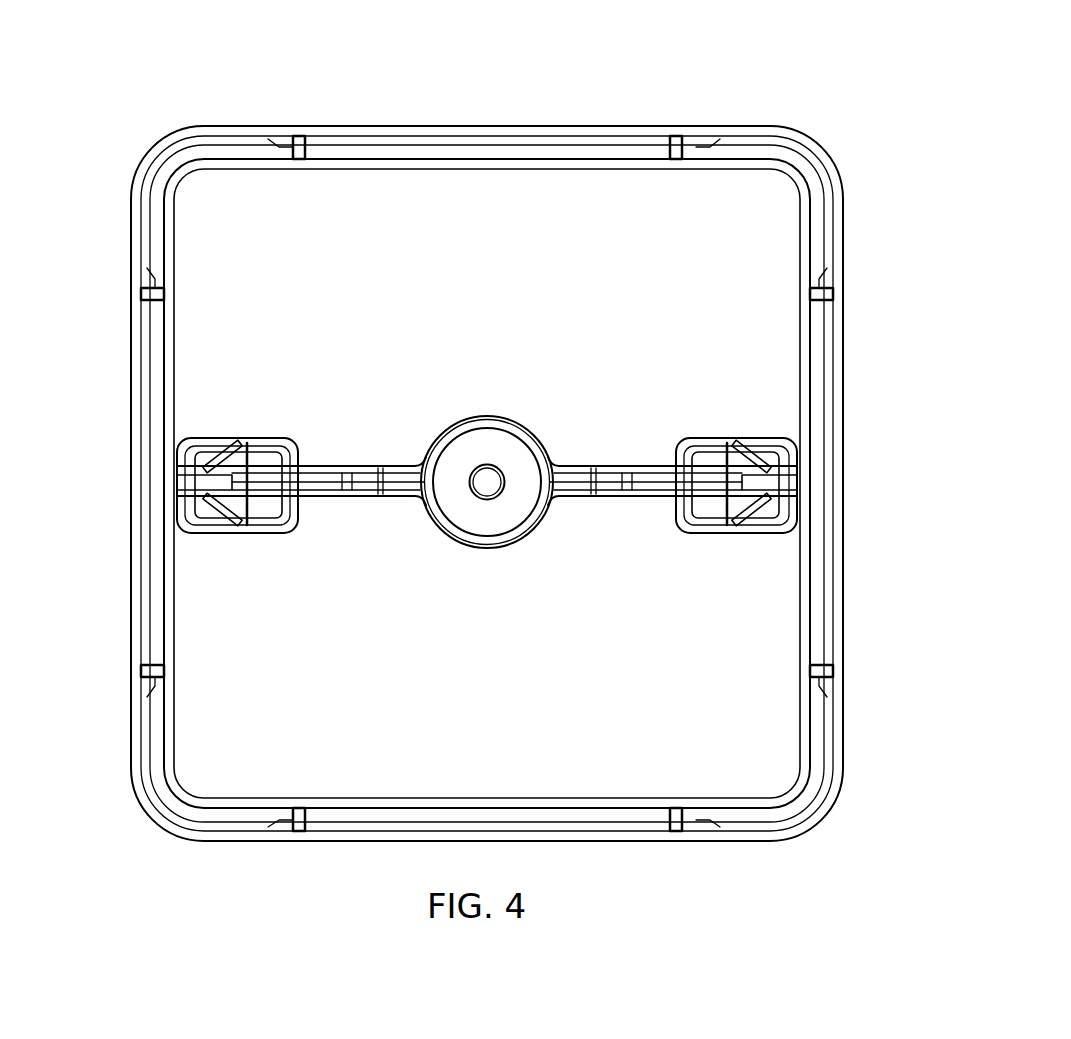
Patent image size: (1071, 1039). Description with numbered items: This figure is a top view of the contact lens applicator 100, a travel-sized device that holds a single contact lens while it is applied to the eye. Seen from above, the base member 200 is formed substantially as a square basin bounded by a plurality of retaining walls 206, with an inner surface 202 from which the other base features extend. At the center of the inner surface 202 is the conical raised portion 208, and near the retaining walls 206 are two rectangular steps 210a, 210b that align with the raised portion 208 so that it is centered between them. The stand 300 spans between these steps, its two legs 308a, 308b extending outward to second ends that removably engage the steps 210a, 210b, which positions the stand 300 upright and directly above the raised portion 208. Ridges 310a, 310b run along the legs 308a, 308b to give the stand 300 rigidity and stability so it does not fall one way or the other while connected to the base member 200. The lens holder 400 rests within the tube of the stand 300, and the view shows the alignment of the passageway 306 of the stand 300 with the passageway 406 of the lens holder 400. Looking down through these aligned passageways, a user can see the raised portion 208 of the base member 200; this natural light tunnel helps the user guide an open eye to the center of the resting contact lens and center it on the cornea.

The contact lens applicator 100 is at (130, 42).
The base member 200 is at (220, 856).
The inner surface 202 is at (700, 742).
The retaining walls 206 is at (820, 623).
The raised portion 208 is at (488, 478).
The step 210a is at (790, 530).
The step 210b is at (210, 448).
The stand 300 is at (491, 523).
The passageway 306 is at (478, 498).
The leg 308a is at (640, 500).
The leg 308b is at (331, 498).
The ridge 310a is at (745, 462).
The ridge 310b is at (205, 503).
The lens holder 400 is at (540, 412).
The passageway 406 is at (500, 496).